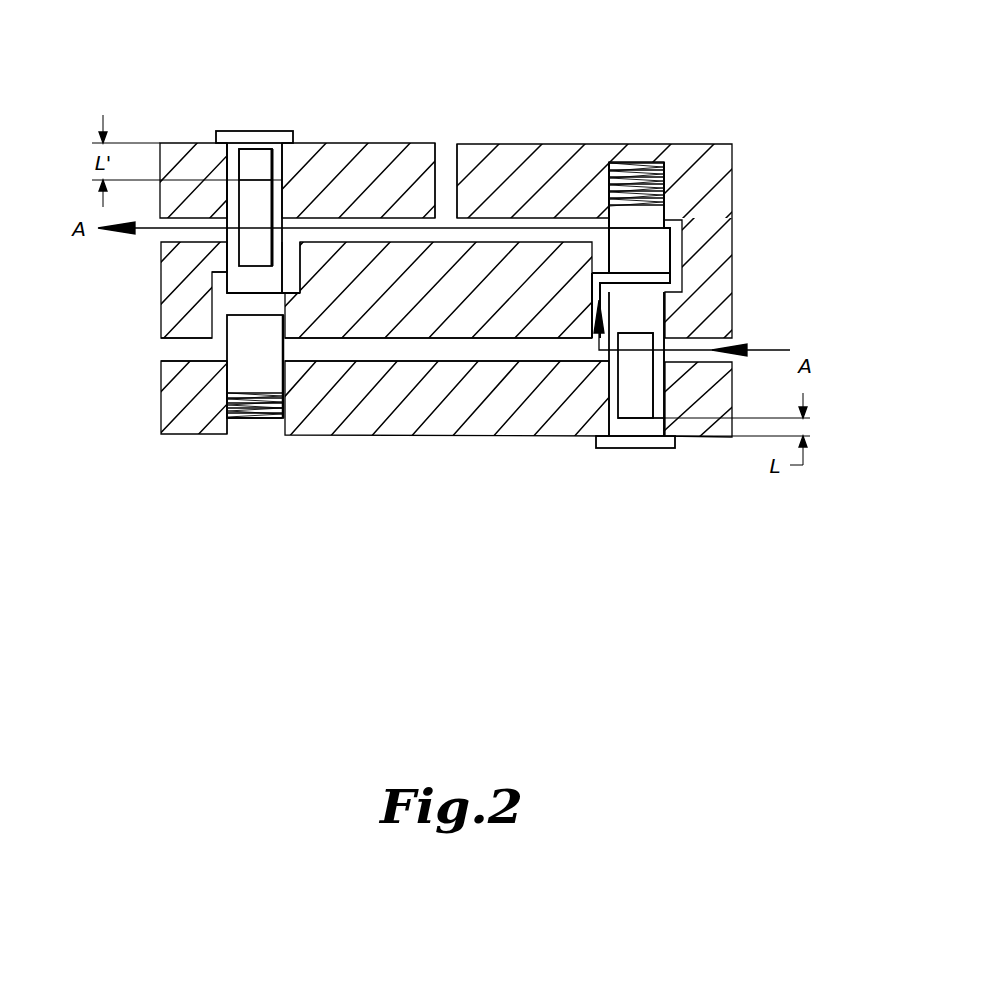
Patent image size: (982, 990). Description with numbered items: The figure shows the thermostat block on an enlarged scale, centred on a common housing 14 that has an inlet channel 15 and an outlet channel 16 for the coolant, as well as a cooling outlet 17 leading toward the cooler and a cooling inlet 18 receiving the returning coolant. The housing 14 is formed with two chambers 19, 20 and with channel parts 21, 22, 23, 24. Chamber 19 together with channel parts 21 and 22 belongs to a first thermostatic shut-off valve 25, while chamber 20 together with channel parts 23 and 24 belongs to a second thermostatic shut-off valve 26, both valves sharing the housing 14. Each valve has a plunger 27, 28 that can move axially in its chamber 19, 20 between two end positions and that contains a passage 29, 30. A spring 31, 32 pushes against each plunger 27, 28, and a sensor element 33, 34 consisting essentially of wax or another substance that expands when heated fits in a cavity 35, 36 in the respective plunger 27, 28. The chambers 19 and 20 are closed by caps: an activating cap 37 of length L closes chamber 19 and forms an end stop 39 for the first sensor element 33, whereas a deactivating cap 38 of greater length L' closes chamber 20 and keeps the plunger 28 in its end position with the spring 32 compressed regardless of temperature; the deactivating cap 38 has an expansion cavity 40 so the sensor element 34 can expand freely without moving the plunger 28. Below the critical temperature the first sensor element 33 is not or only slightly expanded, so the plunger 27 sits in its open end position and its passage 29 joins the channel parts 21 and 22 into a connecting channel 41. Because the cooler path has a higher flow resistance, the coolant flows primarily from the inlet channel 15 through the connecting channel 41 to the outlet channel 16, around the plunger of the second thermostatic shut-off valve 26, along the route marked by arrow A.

The housing 14 is at (438, 322).
The inlet channel 15 is at (525, 355).
The outlet channel 16 is at (358, 218).
The cooling outlet 17 is at (178, 360).
The cooling inlet 18 is at (447, 180).
The chamber 19 is at (653, 253).
The chamber 20 is at (225, 362).
The channel part 21 is at (596, 290).
The channel part 22 is at (677, 267).
The channel part 23 is at (178, 348).
The channel part 24 is at (290, 257).
The first thermostatic shut-off valve 25 is at (657, 400).
The second thermostatic shut-off valve 26 is at (233, 208).
The plunger 27 is at (637, 322).
The plunger 28 is at (250, 279).
The passage 29 is at (638, 278).
The passage 30 is at (225, 360).
The spring 31 is at (636, 173).
The spring 32 is at (262, 410).
The sensor element 33 is at (623, 390).
The sensor element 34 is at (262, 160).
The cavity 35 is at (633, 385).
The cavity 36 is at (273, 200).
The activating cap 37 is at (657, 440).
The deactivating cap 38 is at (273, 143).
The end stop 39 is at (635, 430).
The expansion cavity 40 is at (252, 200).
The connecting channel 41 is at (675, 292).